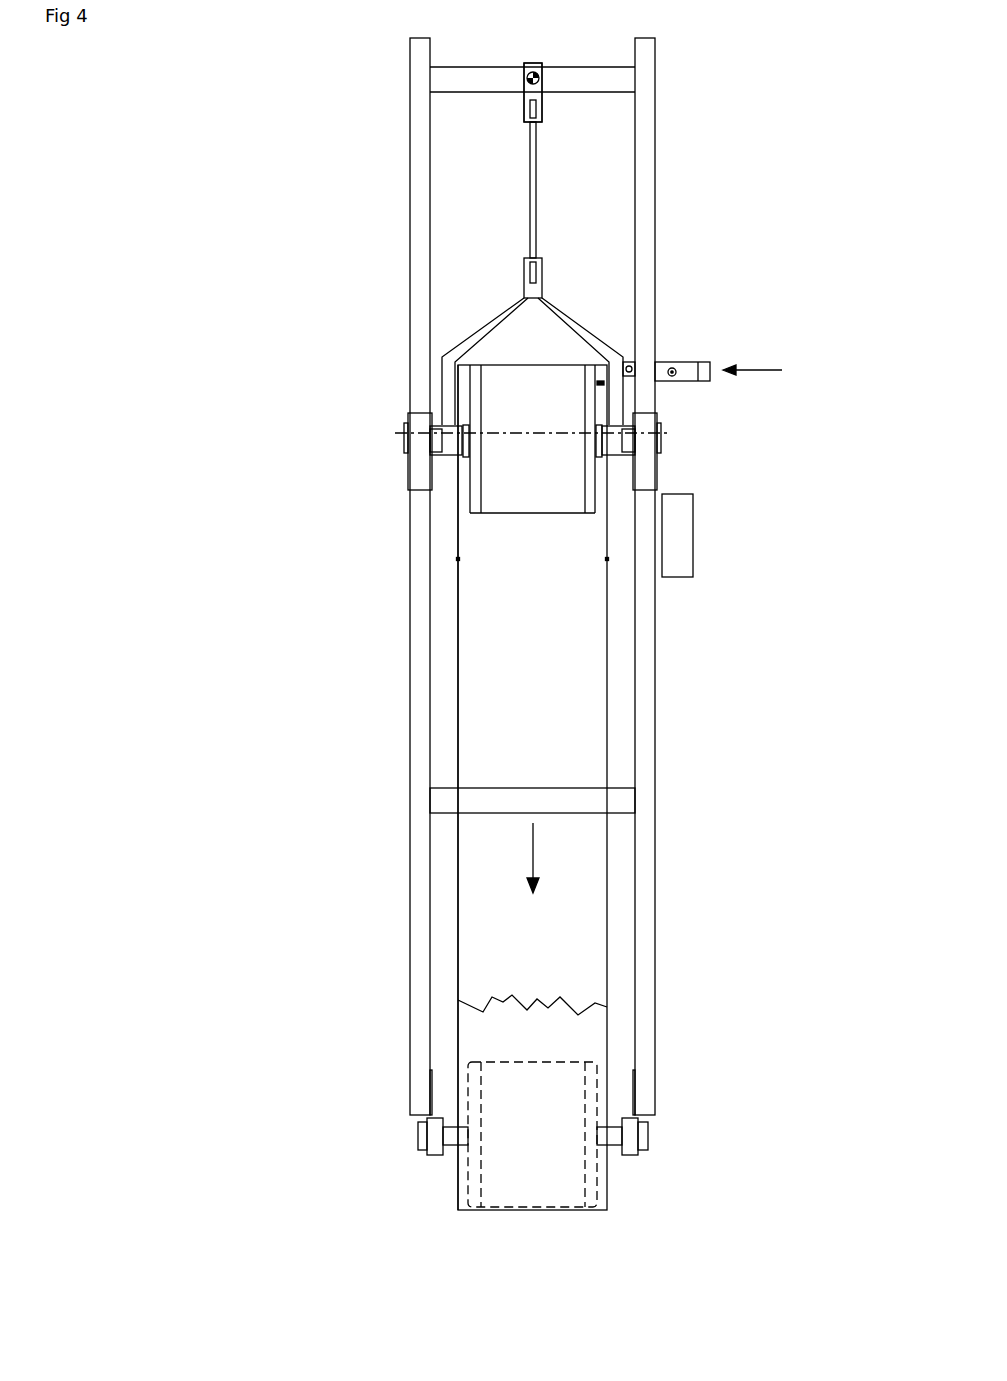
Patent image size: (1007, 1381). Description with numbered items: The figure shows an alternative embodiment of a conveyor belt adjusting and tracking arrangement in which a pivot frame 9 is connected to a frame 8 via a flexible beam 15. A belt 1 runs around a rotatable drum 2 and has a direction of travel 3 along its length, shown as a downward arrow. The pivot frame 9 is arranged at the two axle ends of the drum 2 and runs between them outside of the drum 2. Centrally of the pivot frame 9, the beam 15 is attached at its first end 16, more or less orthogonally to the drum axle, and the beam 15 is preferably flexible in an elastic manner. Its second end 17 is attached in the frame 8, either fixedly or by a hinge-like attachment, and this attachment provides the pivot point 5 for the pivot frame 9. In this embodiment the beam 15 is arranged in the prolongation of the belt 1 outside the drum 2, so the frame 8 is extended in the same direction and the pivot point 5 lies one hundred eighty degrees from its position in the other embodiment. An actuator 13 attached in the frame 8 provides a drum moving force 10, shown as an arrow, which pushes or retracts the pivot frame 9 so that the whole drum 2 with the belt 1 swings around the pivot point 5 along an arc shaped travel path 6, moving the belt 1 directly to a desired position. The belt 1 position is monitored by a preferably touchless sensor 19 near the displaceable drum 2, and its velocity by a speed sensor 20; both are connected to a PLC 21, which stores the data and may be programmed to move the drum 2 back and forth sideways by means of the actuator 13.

The belt 1 is at (585, 692).
The drum 2 is at (502, 480).
The direction of travel 3 is at (535, 858).
The pivot point 5 is at (537, 68).
The arc shaped travel path 6 is at (492, 433).
The frame 8 is at (642, 277).
The pivot frame 9 is at (483, 328).
The drum moving force 10 is at (765, 367).
The actuator 13 is at (685, 355).
The beam 15 is at (535, 192).
The first end 16 is at (520, 258).
The second end 17 is at (535, 123).
The sensor 19 is at (455, 558).
The speed sensor 20 is at (600, 383).
The PLC 21 is at (700, 545).